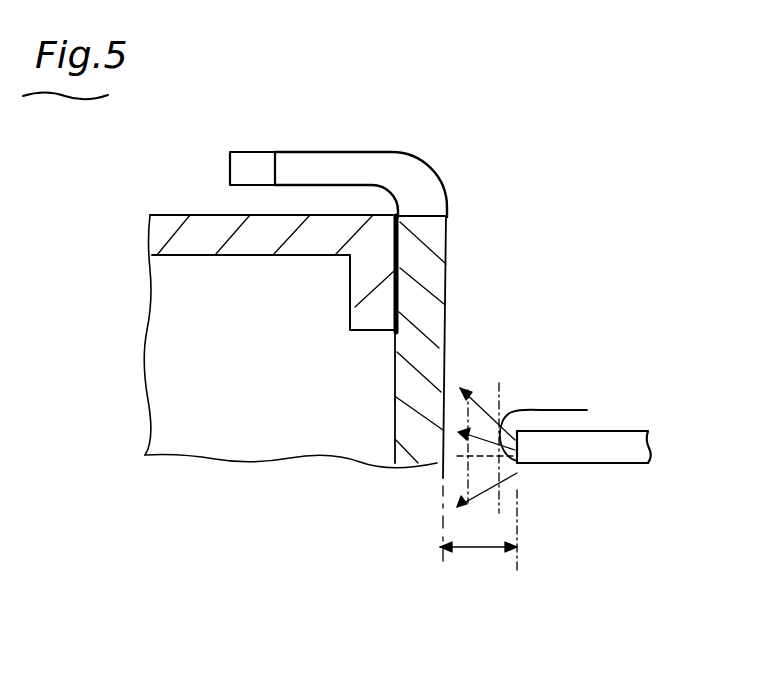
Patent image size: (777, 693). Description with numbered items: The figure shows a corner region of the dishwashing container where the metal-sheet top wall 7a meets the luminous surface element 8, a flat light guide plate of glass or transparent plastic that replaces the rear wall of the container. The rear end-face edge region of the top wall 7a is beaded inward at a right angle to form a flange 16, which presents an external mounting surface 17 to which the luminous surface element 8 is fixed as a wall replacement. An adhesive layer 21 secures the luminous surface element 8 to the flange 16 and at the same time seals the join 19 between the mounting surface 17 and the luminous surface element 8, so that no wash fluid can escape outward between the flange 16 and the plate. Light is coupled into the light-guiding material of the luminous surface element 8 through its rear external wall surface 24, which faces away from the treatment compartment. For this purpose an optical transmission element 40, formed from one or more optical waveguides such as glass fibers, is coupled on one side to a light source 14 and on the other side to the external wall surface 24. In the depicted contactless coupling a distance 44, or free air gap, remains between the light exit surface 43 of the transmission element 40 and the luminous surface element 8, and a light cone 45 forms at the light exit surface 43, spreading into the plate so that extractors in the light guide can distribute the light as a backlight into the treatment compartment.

The top wall 7a is at (198, 230).
The light source 14 is at (265, 163).
The optical transmission element 40 is at (355, 162).
The external mounting surface 17 is at (400, 275).
The adhesive layer 21 is at (398, 300).
The flange 16 is at (372, 288).
The join 19 is at (392, 336).
The rear external wall surface 24 is at (445, 318).
The luminous surface element 8 is at (419, 355).
The light exit surface 43 is at (587, 410).
The light cone 45 is at (487, 468).
The distance 44 is at (480, 548).